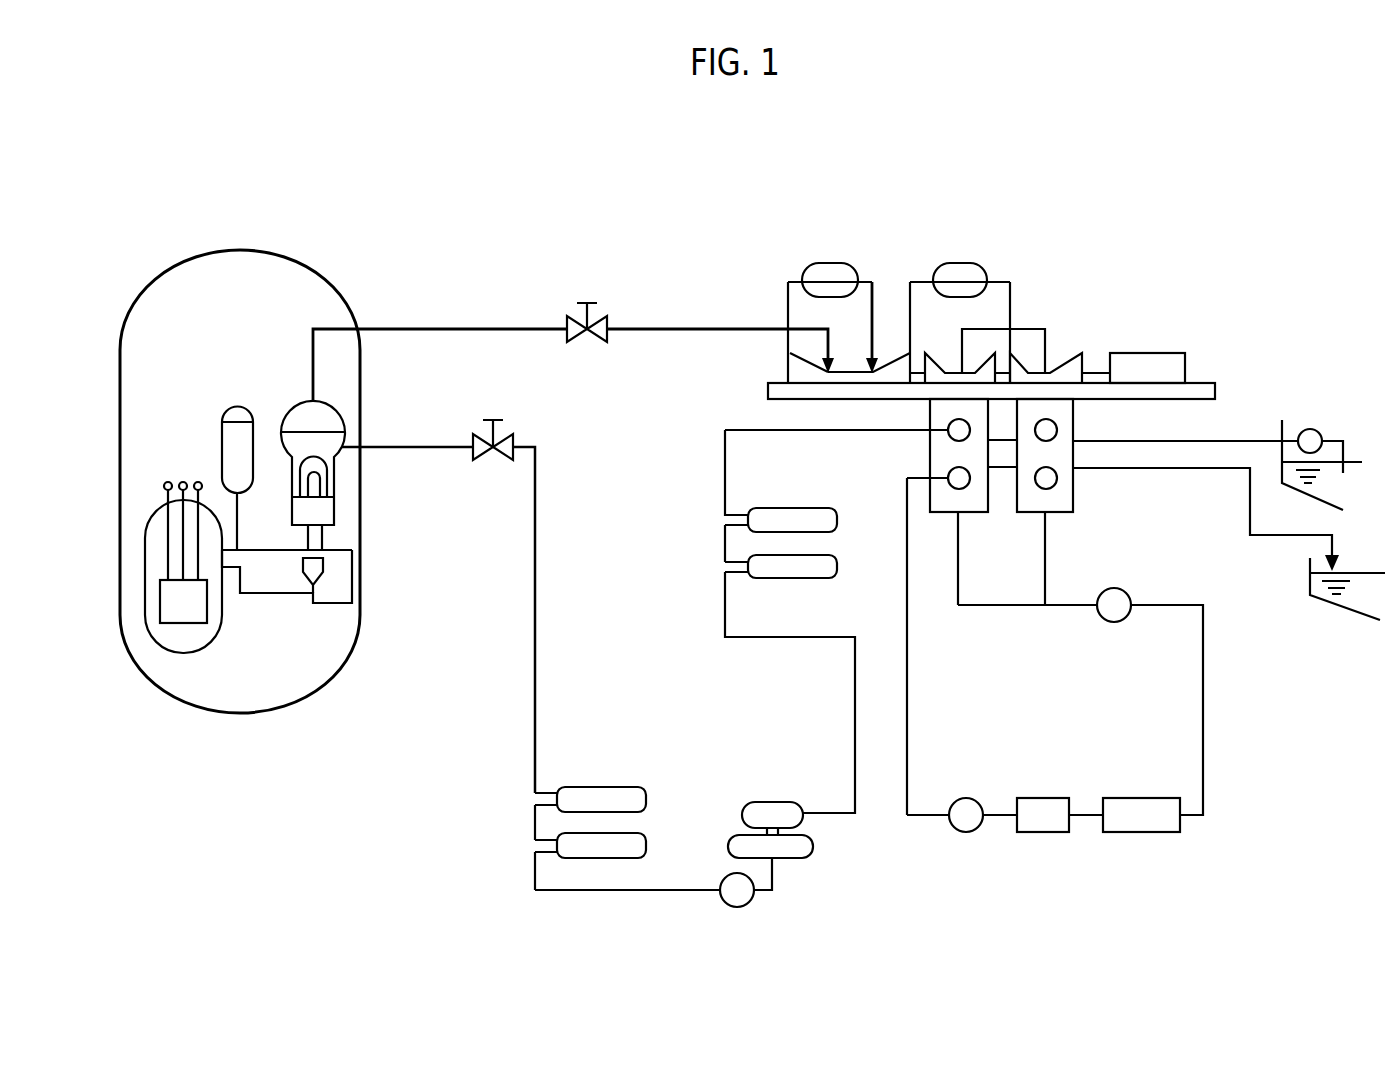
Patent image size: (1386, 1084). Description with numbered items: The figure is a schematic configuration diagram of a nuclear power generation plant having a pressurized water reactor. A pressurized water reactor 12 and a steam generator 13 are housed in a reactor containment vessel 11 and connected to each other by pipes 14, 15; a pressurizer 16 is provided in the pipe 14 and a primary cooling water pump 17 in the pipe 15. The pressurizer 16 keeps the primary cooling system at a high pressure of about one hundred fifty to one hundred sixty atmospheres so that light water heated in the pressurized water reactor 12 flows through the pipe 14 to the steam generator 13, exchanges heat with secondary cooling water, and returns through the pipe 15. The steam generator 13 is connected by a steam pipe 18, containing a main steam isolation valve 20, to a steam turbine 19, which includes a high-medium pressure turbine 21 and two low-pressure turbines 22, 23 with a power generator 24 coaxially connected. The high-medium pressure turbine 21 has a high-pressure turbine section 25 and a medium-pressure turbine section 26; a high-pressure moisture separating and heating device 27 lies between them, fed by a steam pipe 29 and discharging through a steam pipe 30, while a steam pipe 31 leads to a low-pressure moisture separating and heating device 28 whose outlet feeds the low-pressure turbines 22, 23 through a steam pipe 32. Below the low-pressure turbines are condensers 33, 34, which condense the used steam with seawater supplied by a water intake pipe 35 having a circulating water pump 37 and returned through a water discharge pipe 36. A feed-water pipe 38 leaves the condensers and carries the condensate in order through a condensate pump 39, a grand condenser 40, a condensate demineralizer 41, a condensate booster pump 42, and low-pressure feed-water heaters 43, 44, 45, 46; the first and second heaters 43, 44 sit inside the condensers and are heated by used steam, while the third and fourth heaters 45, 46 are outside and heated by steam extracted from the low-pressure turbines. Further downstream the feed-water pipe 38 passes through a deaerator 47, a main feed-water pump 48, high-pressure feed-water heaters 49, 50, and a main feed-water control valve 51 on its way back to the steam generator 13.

The reactor containment vessel 11 is at (138, 288).
The pressurized water reactor 12 is at (140, 514).
The steam generator 13 is at (294, 388).
The pipe 14 is at (270, 548).
The pipe 15 is at (270, 604).
The pressurizer 16 is at (235, 396).
The primary cooling water pump 17 is at (325, 570).
The steam pipe 18 is at (500, 327).
The steam turbine 19 is at (936, 151).
The main steam isolation valve 20 is at (598, 316).
The high-medium pressure turbine 21 is at (765, 370).
The low-pressure turbine 22 is at (990, 346).
The low-pressure turbine 23 is at (1065, 346).
The power generator 24 is at (1178, 350).
The high-pressure turbine section 25 is at (802, 372).
The medium-pressure turbine section 26 is at (890, 372).
The high-pressure moisture separating and heating device 27 is at (830, 262).
The low-pressure moisture separating and heating device 28 is at (960, 262).
The steam pipe 29 is at (803, 268).
The steam pipe 30 is at (866, 280).
The steam pipe 31 is at (925, 280).
The steam pipe 32 is at (1002, 280).
The condenser 33 is at (937, 515).
The condenser 34 is at (1075, 495).
The water intake pipe 35 is at (1258, 438).
The water discharge pipe 36 is at (1222, 471).
The circulating water pump 37 is at (1310, 428).
The feed-water pipe 38 is at (1205, 717).
The condensate pump 39 is at (1115, 623).
The grand condenser 40 is at (1140, 833).
The condensate demineralizer 41 is at (1043, 833).
The condensate booster pump 42 is at (966, 833).
The first low-pressure feed-water heater 43 is at (966, 490).
The second low-pressure feed-water heater 44 is at (932, 437).
The third low-pressure feed-water heater 45 is at (838, 521).
The fourth low-pressure feed-water heater 46 is at (838, 566).
The deaerator 47 is at (770, 801).
The main feed-water pump 48 is at (737, 908).
The high-pressure feed-water heater 49 is at (648, 848).
The high-pressure feed-water heater 50 is at (648, 801).
The main feed-water control valve 51 is at (505, 433).